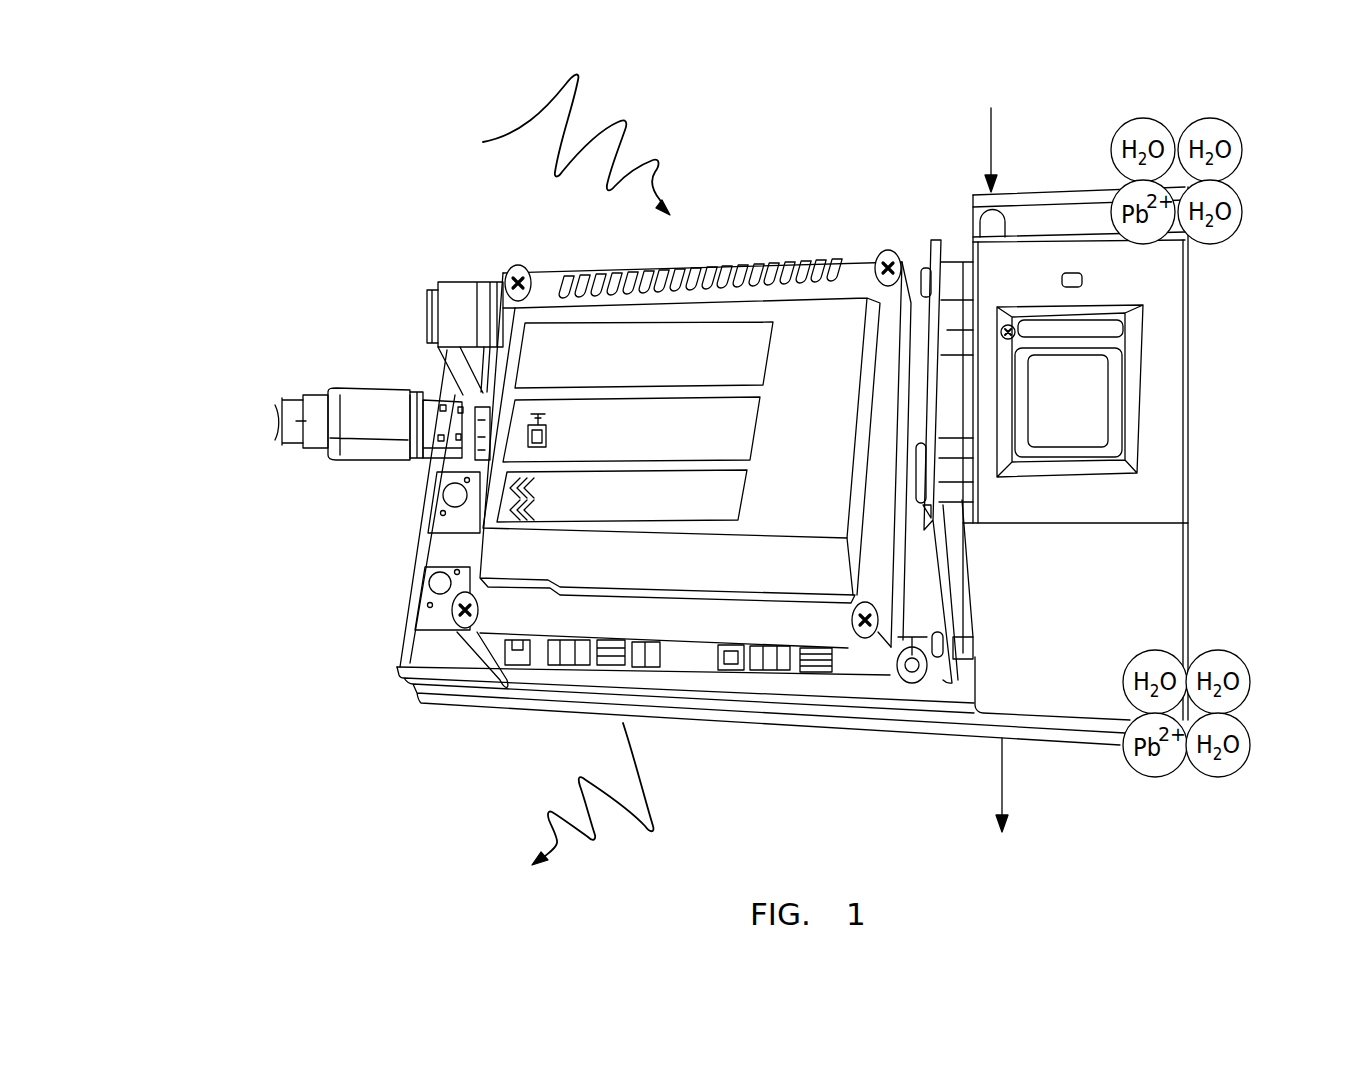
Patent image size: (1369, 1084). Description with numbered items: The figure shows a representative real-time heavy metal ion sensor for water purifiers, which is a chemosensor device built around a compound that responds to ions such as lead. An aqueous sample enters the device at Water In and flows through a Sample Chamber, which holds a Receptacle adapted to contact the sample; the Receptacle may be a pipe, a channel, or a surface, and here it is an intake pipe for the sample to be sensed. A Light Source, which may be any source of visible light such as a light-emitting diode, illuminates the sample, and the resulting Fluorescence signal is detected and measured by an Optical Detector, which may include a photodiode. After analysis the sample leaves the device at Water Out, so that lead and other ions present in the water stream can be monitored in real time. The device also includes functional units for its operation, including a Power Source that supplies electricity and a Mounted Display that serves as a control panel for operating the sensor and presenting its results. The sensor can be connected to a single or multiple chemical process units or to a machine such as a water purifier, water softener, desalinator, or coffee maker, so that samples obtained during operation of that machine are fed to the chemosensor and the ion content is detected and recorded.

The light source Light Source is at (509, 145).
The fluorescence Fluorescence is at (506, 791).
The optical detector Optical Detector is at (488, 867).
The water in Water In is at (938, 150).
The water out Water Out is at (935, 785).
The power source Power Source is at (412, 332).
The mounted display Mounted Display is at (681, 440).
The sample chamber Sample Chamber is at (1075, 453).
The receptacle Receptacle is at (1145, 380).